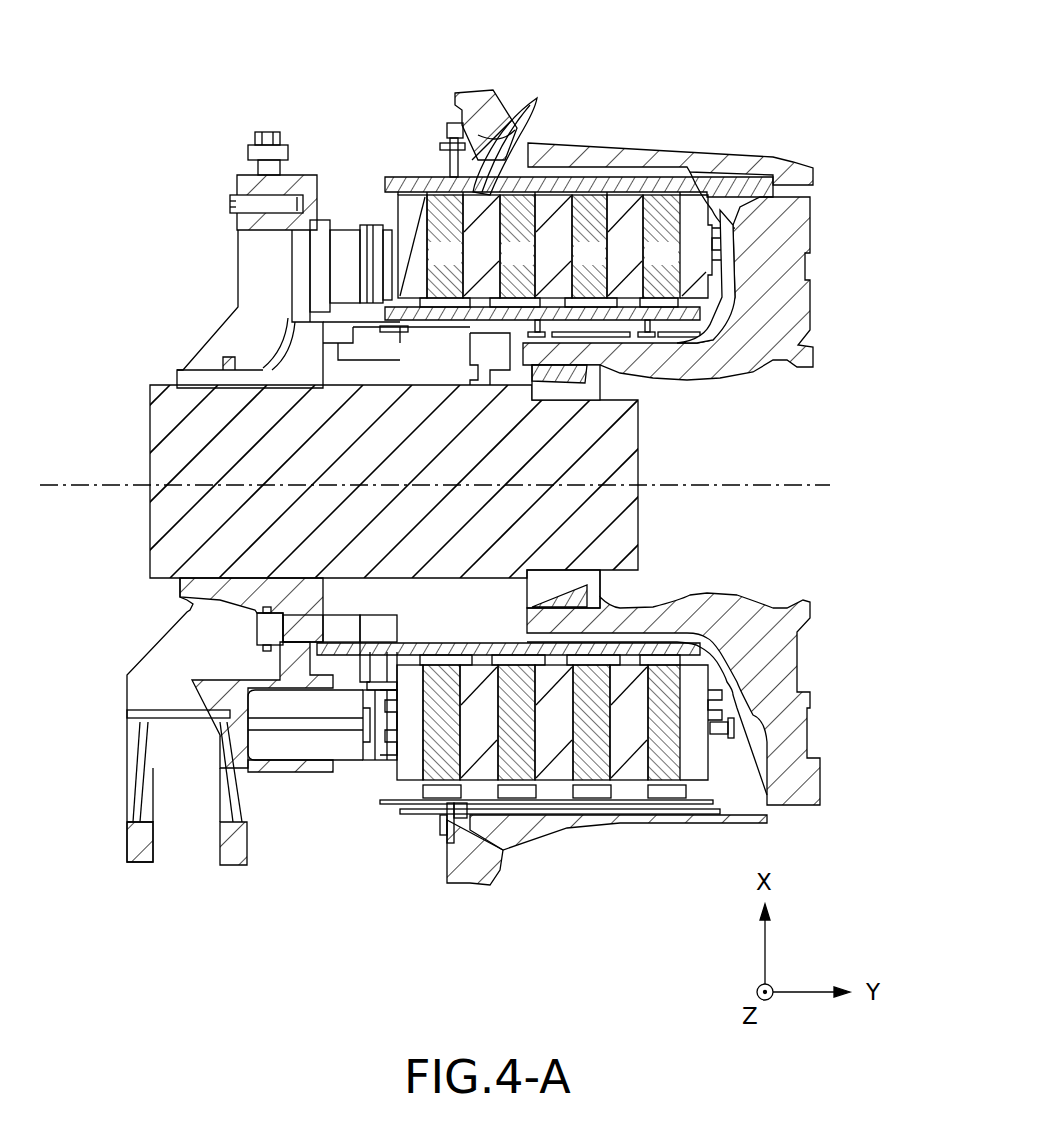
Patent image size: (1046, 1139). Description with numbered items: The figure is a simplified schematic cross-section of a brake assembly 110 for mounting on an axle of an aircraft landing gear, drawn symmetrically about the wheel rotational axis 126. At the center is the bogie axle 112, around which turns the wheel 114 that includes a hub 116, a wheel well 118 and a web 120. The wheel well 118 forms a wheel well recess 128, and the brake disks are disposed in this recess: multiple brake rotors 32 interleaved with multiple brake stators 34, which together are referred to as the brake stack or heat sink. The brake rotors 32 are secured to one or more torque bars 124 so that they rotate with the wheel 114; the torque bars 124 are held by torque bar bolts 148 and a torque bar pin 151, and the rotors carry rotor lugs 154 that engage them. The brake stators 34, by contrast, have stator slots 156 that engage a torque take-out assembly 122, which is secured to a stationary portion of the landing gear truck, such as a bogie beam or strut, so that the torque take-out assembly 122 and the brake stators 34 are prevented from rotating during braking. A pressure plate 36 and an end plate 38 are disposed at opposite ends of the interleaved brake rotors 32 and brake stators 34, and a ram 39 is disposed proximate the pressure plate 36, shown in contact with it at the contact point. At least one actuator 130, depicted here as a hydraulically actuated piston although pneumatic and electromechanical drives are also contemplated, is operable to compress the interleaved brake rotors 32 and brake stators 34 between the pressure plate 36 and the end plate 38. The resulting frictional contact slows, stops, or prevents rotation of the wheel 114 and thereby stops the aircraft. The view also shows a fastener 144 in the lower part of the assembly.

The brake assembly 110 is at (812, 100).
The bogie axle 112 is at (133, 437).
The wheel 114 is at (660, 134).
The hub 116 is at (610, 355).
The wheel well 118 is at (793, 174).
The web 120 is at (790, 693).
The torque take-out assembly 122 is at (442, 333).
The torque bars 124 is at (397, 177).
The wheel rotational axis 126 is at (712, 484).
The wheel well recess 128 is at (753, 243).
The actuator 130 is at (298, 790).
The fastener 144 is at (443, 800).
The torque bar bolts 148 is at (453, 160).
The torque bar pin 151 is at (760, 206).
The rotor lugs 154 is at (528, 185).
The stator slots 156 is at (490, 327).
The brake rotors 32 is at (553, 246).
The brake stators 34 is at (553, 246).
The pressure plate 36 is at (412, 246).
The end plate 38 is at (696, 246).
The ram 39 is at (387, 227).